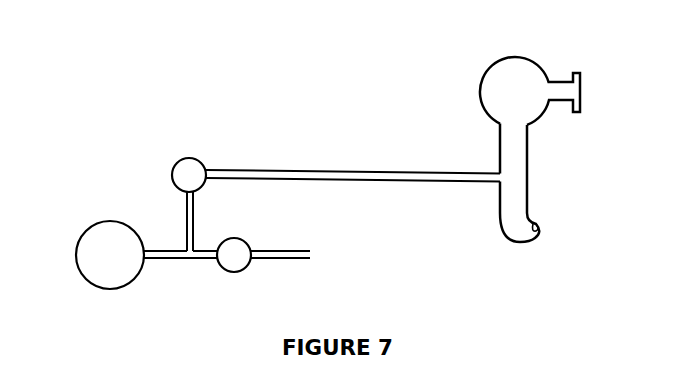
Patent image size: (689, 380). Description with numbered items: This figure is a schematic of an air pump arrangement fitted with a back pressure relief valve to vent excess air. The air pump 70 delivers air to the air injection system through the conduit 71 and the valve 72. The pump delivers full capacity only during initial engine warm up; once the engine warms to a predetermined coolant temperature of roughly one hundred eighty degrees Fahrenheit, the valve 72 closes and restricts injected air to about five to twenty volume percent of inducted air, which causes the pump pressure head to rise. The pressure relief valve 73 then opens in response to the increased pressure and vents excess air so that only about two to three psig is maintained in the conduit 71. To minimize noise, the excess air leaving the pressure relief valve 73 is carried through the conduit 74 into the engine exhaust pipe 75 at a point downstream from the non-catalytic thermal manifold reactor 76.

The air pump 70 is at (104, 221).
The conduit 71 is at (200, 260).
The valve 72 is at (244, 268).
The pressure relief valve 73 is at (180, 160).
The conduit 74 is at (302, 168).
The engine exhaust pipe 75 is at (528, 193).
The non-catalytic thermal manifold reactor 76 is at (484, 74).